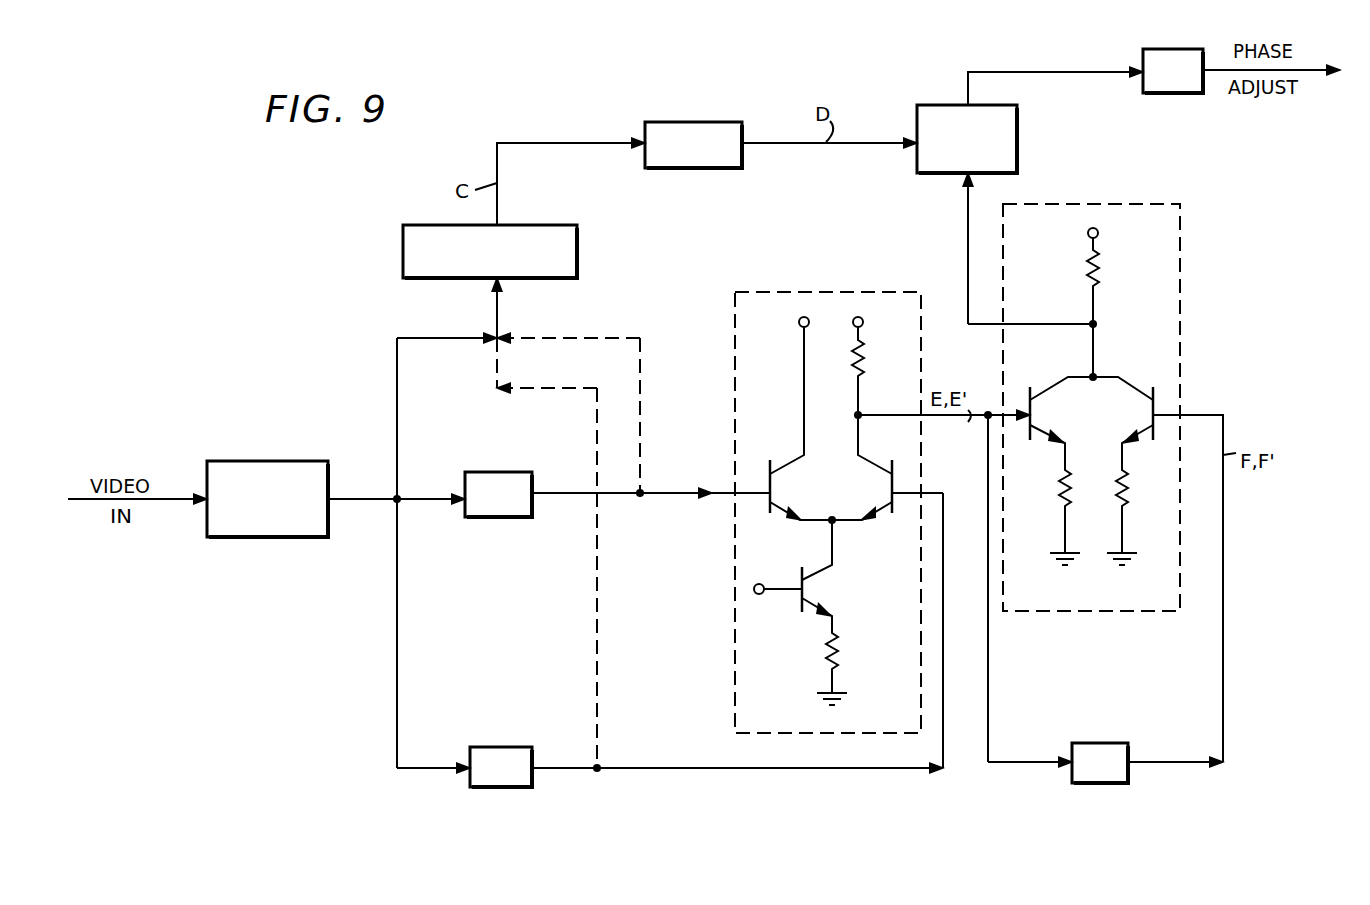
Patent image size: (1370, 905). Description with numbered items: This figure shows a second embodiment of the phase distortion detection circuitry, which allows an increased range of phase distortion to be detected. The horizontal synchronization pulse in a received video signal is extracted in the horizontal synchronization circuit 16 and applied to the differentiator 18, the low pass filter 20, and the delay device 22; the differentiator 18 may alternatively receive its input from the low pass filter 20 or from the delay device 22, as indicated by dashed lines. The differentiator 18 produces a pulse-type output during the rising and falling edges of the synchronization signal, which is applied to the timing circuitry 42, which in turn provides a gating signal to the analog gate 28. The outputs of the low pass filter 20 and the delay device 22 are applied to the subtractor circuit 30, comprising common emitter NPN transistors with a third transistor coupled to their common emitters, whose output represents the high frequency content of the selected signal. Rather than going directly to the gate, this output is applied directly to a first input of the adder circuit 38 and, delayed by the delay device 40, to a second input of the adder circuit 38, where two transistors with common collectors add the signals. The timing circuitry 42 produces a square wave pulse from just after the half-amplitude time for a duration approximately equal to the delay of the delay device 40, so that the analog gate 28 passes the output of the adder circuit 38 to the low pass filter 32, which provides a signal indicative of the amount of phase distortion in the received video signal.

The horizontal synchronization circuit 16 is at (288, 537).
The differentiator 18 is at (403, 250).
The low pass filter 20 is at (497, 517).
The delay device 22 is at (508, 787).
The analog gate 28 is at (930, 105).
The subtractor circuit 30 is at (848, 292).
The low pass filter 32 is at (1150, 49).
The adder circuit 38 is at (1180, 262).
The delay device 40 is at (1098, 783).
The timing circuitry 42 is at (706, 122).